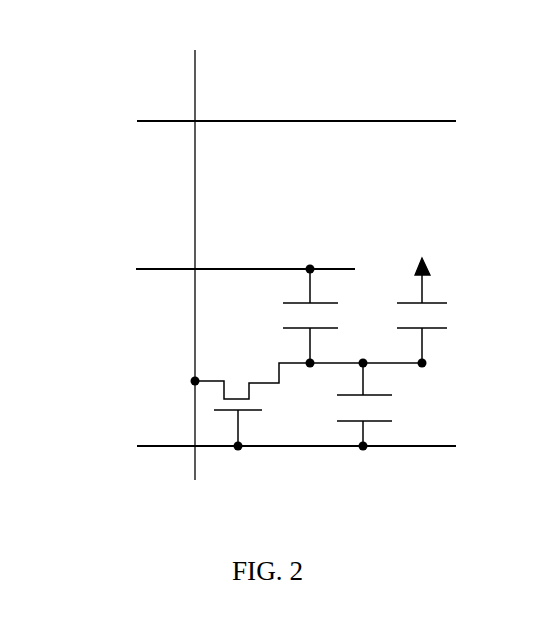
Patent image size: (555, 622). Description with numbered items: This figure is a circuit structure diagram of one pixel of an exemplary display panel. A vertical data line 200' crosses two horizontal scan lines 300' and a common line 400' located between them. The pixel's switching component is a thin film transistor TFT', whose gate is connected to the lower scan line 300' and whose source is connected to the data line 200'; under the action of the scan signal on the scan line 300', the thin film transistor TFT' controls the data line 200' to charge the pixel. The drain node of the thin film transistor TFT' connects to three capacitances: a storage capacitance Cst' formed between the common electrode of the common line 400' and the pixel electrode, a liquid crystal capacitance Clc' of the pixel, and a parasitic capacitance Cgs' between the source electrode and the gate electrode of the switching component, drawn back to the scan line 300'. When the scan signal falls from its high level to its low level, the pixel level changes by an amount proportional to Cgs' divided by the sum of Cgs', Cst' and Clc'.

The data line 200' is at (118, 253).
The scan line 300' is at (249, 265).
The common line 400' is at (198, 253).
The thin film transistor TFT' is at (251, 407).
The storage capacitance Cst' is at (288, 316).
The parasitic capacitance Cgs' is at (389, 405).
The liquid crystal capacitance Clc' is at (444, 313).